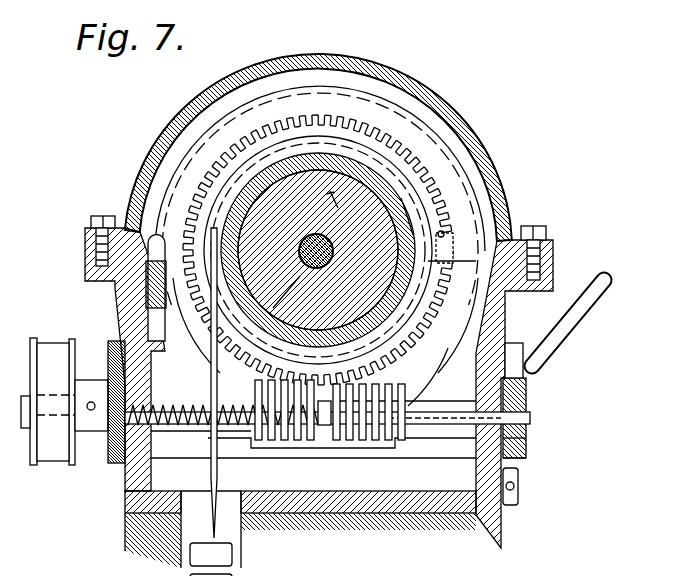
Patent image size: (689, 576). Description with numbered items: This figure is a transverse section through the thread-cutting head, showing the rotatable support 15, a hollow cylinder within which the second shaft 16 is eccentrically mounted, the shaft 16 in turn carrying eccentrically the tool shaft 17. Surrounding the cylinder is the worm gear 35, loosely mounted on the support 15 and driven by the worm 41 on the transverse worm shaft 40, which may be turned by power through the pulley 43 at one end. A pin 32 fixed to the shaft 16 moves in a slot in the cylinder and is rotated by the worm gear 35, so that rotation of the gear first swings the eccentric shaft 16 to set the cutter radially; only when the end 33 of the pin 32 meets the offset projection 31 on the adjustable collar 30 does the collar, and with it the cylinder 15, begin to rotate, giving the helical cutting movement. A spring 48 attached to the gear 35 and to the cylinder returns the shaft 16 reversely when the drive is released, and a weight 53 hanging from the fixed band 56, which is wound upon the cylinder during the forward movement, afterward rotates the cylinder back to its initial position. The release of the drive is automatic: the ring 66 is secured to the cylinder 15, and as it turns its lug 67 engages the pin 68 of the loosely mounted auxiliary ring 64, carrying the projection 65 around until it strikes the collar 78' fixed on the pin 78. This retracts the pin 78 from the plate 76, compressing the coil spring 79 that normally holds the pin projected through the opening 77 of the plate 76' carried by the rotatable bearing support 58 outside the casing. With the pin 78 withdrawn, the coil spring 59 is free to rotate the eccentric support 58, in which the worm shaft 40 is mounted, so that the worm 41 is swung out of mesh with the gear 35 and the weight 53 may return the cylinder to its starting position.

The rotatable support 15 is at (420, 291).
The second shaft 16 is at (322, 183).
The tool shaft 17 is at (328, 230).
The adjustable collar 30 is at (318, 575).
The offset projection 31 is at (205, 352).
The pin 32 is at (230, 372).
The end of pin 33 is at (245, 381).
The worm gear 35 is at (423, 350).
The worm shaft 40 is at (441, 401).
The worm 41 is at (345, 432).
The pulley 43 is at (50, 338).
The spring 48 is at (400, 398).
The weight 53 is at (215, 546).
The fixed band 56 is at (209, 466).
The rotatable bearing support 58 is at (438, 448).
The coil spring 59 is at (110, 443).
The auxiliary ring 64 is at (497, 309).
The projection 65 is at (465, 176).
The ring 66 is at (395, 150).
The lug 67 is at (464, 254).
The pin 68 is at (436, 223).
The plate 76 is at (553, 392).
The plate 76' is at (532, 450).
The opening 77 is at (518, 424).
The pin 78 is at (342, 409).
The collar 78' is at (310, 442).
The coil spring 79 is at (197, 423).